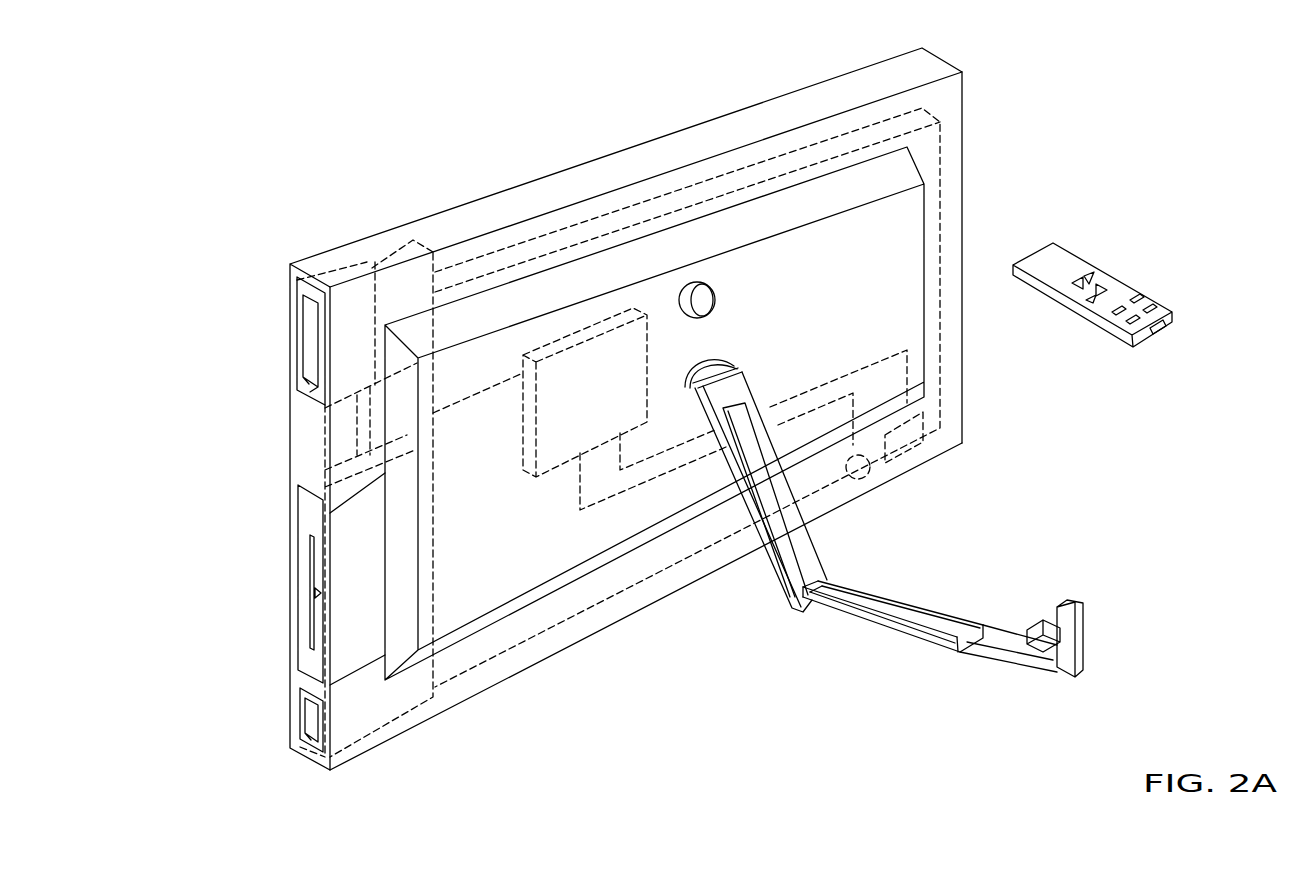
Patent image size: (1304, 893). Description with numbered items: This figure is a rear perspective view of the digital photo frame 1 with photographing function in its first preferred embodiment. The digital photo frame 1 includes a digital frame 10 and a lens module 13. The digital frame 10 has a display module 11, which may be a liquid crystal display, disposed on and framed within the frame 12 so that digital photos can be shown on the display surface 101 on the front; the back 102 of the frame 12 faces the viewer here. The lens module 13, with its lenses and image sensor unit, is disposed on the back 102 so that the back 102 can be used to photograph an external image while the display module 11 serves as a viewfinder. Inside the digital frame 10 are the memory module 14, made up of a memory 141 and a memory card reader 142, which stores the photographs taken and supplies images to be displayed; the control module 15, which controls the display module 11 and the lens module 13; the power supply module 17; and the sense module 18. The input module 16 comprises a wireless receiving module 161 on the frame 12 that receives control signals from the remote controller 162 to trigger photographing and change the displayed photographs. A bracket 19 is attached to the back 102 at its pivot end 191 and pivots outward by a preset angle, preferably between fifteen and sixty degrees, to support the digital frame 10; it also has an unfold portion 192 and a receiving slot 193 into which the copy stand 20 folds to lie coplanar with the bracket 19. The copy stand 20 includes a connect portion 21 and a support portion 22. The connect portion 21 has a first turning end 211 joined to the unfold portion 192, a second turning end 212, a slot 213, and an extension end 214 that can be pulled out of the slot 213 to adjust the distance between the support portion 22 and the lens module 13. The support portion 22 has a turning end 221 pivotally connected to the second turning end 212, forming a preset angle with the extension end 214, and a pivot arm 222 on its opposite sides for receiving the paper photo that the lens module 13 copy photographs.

The digital photo frame 1 is at (1092, 106).
The digital frame 10 is at (632, 139).
The display module 11 is at (790, 150).
The frame 12 is at (480, 215).
The lens module 13 is at (700, 283).
The memory module 14 is at (397, 147).
The memory 141 is at (318, 300).
The memory card reader 142 is at (372, 250).
The control module 15 is at (561, 330).
The input module 16 is at (1115, 489).
The wireless receiving module 161 is at (925, 440).
The remote controller 162 is at (1100, 322).
The power supply module 17 is at (320, 483).
The sense module 18 is at (870, 480).
The bracket 19 is at (772, 686).
The pivot end 191 is at (692, 397).
The unfold portion 192 is at (795, 600).
The receiving slot 193 is at (786, 527).
The copy stand 20 is at (1100, 749).
The connect portion 21 is at (772, 716).
The first turning end 211 is at (820, 602).
The second turning end 212 is at (1057, 670).
The slot 213 is at (852, 597).
The extension end 214 is at (987, 638).
The support portion 22 is at (1130, 716).
The turning end 221 is at (1068, 648).
The pivot arm 222 is at (1083, 668).
The display surface 101 is at (291, 533).
The back 102 is at (534, 658).